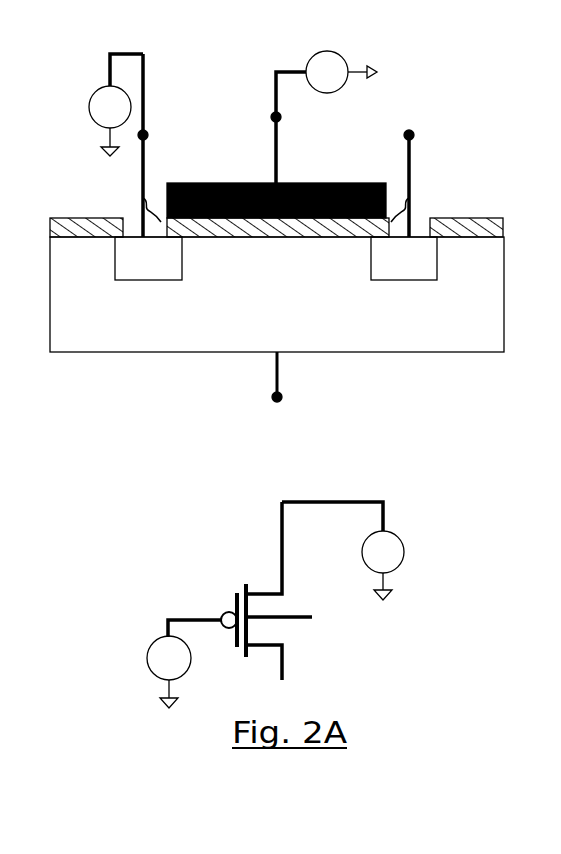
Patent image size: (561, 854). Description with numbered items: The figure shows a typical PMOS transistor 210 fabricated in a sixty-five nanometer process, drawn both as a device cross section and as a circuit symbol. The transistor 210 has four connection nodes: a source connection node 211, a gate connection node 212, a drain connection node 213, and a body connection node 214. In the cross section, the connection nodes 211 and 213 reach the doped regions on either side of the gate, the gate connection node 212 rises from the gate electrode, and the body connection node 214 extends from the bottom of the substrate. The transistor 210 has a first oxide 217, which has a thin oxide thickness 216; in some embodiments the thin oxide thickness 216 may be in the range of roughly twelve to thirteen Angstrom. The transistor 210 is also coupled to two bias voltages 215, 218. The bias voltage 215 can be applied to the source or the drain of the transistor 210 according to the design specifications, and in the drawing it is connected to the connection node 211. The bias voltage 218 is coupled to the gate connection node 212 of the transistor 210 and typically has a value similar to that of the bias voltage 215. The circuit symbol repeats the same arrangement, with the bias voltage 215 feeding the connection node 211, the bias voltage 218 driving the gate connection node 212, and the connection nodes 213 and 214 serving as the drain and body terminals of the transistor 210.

The typical PMOS transistor 210 is at (550, 66).
The source connection node 211 is at (143, 145).
The gate connection node 212 is at (275, 130).
The drain connection node 213 is at (402, 148).
The body connection node 214 is at (273, 382).
The bias voltage 215 is at (89, 100).
The thin oxide thickness 216 is at (413, 207).
The first oxide 217 is at (140, 205).
The bias voltage 218 is at (213, 365).